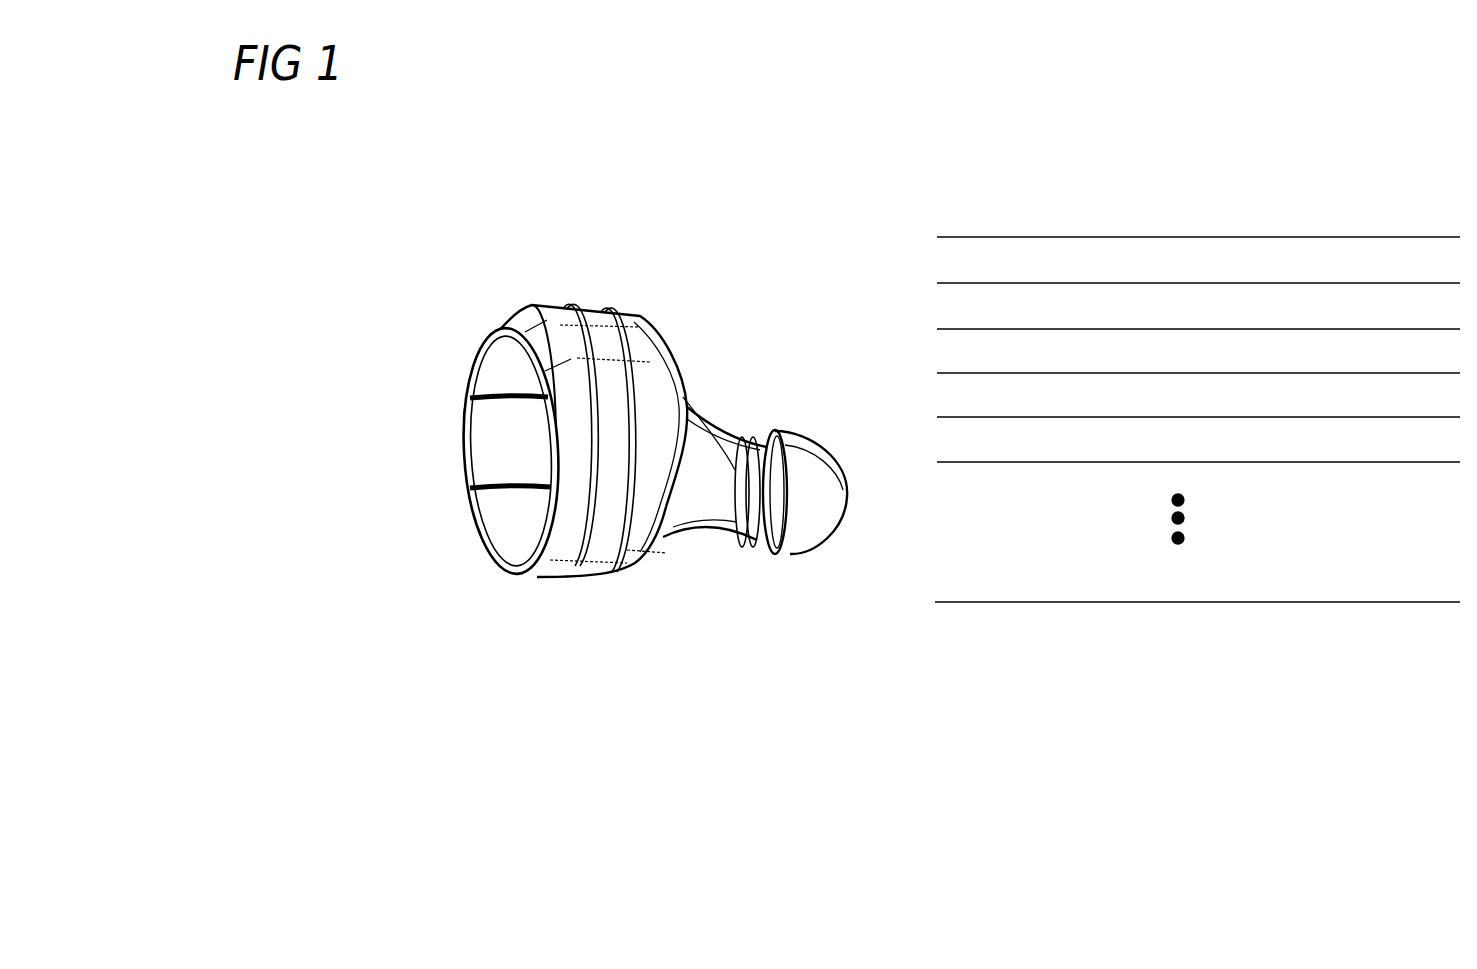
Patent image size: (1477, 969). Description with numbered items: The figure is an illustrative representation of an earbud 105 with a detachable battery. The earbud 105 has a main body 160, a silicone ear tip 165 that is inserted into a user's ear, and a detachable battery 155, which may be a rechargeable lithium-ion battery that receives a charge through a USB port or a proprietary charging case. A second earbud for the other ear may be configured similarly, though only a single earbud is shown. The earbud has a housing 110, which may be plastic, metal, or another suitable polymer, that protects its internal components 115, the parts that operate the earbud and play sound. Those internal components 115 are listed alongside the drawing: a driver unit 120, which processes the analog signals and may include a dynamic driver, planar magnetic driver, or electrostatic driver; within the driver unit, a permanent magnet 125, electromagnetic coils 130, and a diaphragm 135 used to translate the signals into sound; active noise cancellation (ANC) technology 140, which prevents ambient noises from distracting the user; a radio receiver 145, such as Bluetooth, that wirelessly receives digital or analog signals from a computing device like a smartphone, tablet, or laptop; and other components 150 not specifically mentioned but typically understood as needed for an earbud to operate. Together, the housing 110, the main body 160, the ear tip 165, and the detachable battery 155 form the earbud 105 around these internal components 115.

The earbud 105 is at (386, 296).
The housing 110 is at (538, 223).
The internal components 115 is at (1198, 325).
The driver unit 120 is at (647, 323).
The permanent magnet 125 is at (635, 372).
The electromagnetic coils 130 is at (636, 418).
The diaphragm 135 is at (637, 462).
The active noise cancellation (ANC) technology 140 is at (637, 508).
The radio receiver 145 is at (735, 525).
The other components 150 is at (1197, 587).
The detachable battery 155 is at (512, 523).
The main body 160 is at (727, 547).
The silicone ear tip 165 is at (786, 556).